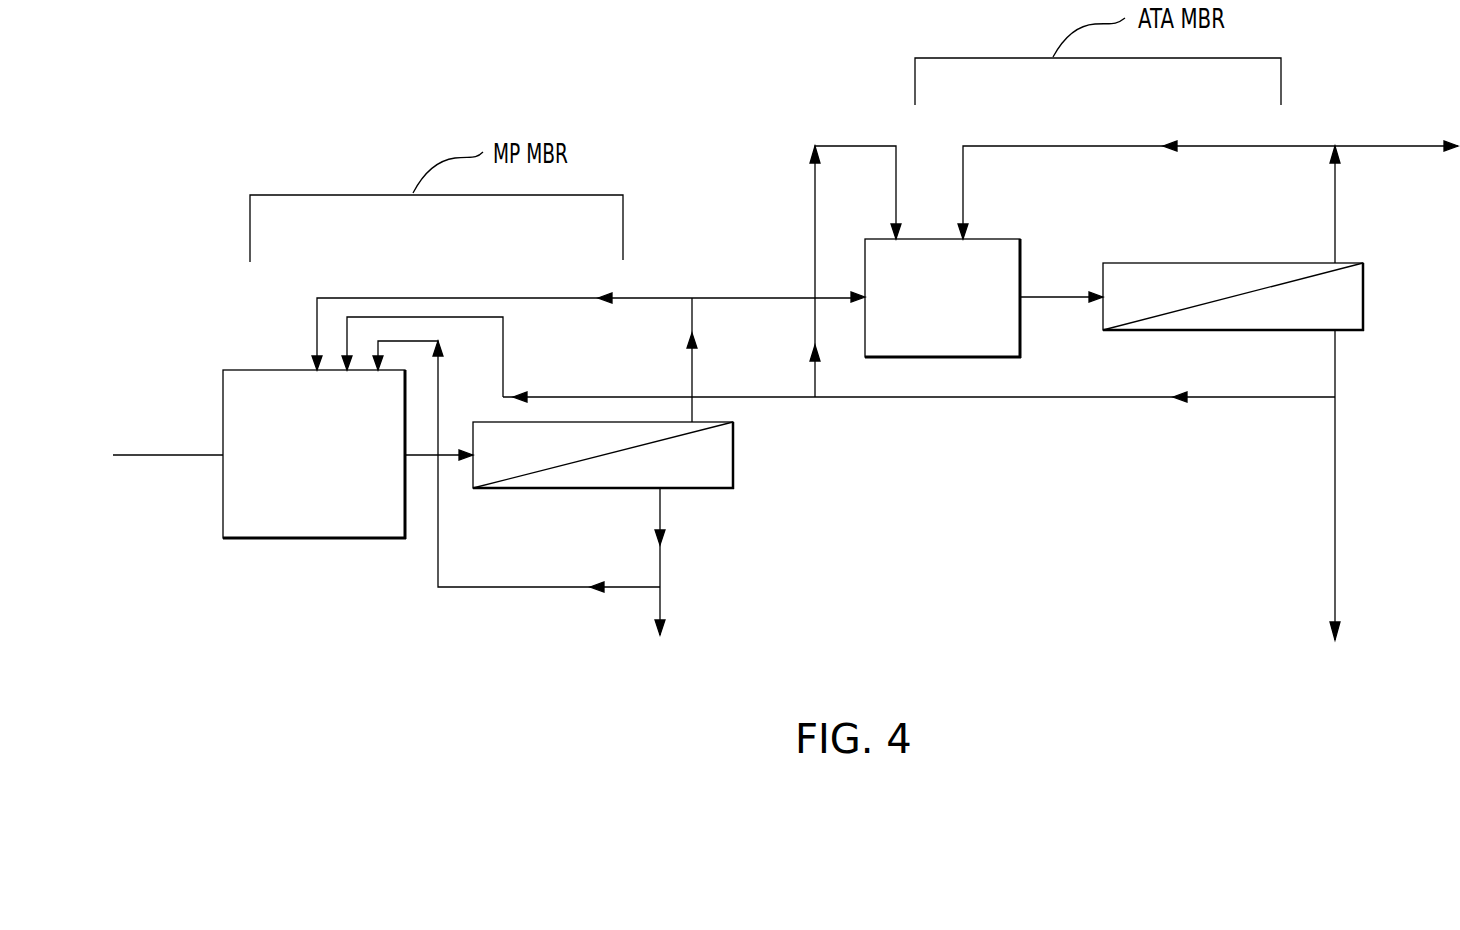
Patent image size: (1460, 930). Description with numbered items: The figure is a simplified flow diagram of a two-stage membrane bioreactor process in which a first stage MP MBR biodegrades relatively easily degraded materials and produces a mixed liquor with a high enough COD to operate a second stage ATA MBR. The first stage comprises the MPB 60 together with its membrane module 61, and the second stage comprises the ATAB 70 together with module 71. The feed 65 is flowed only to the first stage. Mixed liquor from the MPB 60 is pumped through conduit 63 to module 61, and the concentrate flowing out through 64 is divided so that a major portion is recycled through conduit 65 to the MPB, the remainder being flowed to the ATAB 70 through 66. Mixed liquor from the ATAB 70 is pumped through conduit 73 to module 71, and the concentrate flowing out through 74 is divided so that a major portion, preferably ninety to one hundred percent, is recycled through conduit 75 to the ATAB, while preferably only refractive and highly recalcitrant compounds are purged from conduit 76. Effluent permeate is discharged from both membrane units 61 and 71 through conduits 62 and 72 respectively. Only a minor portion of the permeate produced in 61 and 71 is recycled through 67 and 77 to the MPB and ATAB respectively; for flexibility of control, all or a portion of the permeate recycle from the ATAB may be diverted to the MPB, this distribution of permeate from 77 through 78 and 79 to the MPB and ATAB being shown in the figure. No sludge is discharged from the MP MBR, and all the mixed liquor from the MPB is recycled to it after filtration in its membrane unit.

The MPB 60 is at (336, 508).
The membrane module 61 is at (735, 443).
The conduit 62 is at (660, 598).
The conduit 63 is at (445, 452).
The conduit 64 is at (690, 377).
The feed / conduit 65 is at (176, 454).
The conduit 66 is at (772, 297).
The conduit 67 is at (438, 527).
The ATAB 70 is at (966, 333).
The module 71 is at (1363, 302).
The conduit 72 is at (1335, 455).
The conduit 73 is at (1050, 300).
The conduit 74 is at (1335, 188).
The conduit 75 is at (1090, 147).
The conduit 76 is at (1403, 145).
The conduit 77 is at (1045, 398).
The conduit 78 is at (503, 352).
The conduit 79 is at (813, 213).